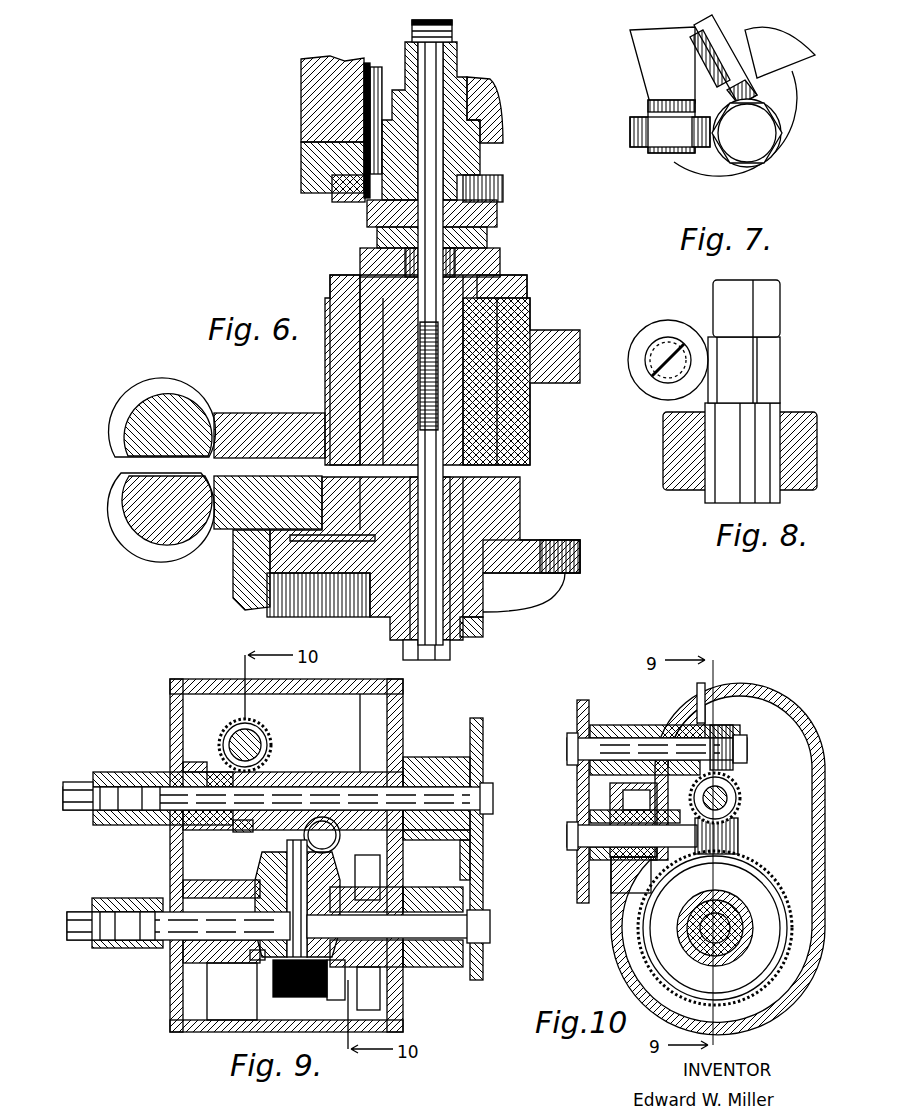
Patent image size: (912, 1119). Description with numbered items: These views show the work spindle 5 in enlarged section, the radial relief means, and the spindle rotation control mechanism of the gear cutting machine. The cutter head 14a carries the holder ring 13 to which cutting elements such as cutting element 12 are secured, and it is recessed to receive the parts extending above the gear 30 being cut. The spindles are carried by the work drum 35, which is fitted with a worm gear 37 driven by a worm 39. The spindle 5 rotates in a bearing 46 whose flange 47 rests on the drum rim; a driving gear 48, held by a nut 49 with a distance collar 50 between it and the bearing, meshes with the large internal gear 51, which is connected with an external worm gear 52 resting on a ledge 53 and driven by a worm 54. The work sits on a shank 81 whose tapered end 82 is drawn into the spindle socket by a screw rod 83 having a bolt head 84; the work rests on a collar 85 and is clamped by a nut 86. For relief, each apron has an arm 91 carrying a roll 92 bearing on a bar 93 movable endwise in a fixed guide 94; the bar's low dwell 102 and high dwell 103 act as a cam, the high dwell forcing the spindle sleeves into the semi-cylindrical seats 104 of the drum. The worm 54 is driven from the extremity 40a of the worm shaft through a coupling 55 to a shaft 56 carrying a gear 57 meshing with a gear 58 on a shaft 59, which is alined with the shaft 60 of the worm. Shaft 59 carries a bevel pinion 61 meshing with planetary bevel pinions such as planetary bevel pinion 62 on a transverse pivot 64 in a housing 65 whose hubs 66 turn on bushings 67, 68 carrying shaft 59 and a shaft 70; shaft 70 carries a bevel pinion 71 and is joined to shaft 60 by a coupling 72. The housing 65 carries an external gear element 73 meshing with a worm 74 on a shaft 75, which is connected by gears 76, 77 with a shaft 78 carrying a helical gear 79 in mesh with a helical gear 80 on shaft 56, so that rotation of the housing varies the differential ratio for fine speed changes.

In FIG. 6, the work spindle 5 is at (457, 523).
In FIG. 6, the cutting element 12 is at (345, 196).
In FIG. 6, the holder ring 13 is at (322, 163).
In FIG. 6, the cutter head 14a is at (312, 100).
In FIG. 6, the gear 30 is at (484, 213).
In FIG. 6, the work drum 35 is at (342, 379).
In FIG. 6, the worm gear 37 is at (247, 424).
In FIG. 6, the worm 39 is at (172, 384).
In FIG. 6, the bearing 46 is at (490, 397).
In FIG. 6, the flange 47 is at (520, 284).
In FIG. 6, the driving gear 48 is at (526, 565).
In FIG. 6, the nut 49 is at (475, 633).
In FIG. 6, the distance collar 50 is at (513, 538).
In FIG. 6, the internal gear 51 is at (260, 612).
In FIG. 6, the worm gear 52 is at (227, 531).
In FIG. 6, the ledge 53 is at (247, 577).
In FIG. 6, the worm 54 is at (163, 549).
In FIG. 6, the shank 81 is at (433, 173).
In FIG. 6, the tapered end 82 is at (443, 273).
In FIG. 6, the screw rod 83 is at (427, 507).
In FIG. 6, the bolt head 84 is at (428, 649).
In FIG. 6, the collar 85 is at (478, 238).
In FIG. 6, the nut 86 is at (452, 30).
In FIG. 6, the semi-cylindrical seat 104 is at (360, 323).
In FIG. 7, the arm 91 is at (653, 58).
In FIG. 7, the roll 92 is at (640, 141).
In FIG. 8, the roll 92 is at (668, 330).
In FIG. 7, the bar 93 is at (755, 150).
In FIG. 8, the bar 93 is at (748, 442).
In FIG. 7, the fixed guide 94 is at (793, 177).
In FIG. 8, the fixed guide 94 is at (800, 455).
In FIG. 7, the low dwell 102 is at (775, 117).
In FIG. 8, the low dwell 102 is at (767, 323).
In FIG. 7, the high dwell 103 is at (772, 107).
In FIG. 8, the high dwell 103 is at (767, 375).
In FIG. 9, the extremity of shaft 40a is at (85, 788).
In FIG. 9, the coupling 55 is at (120, 782).
In FIG. 9, the shaft 56 is at (308, 793).
In FIG. 10, the shaft 56 is at (740, 802).
In FIG. 9, the gear 57 is at (483, 747).
In FIG. 9, the gear 58 is at (480, 898).
In FIG. 9, the shaft 59 is at (435, 927).
In FIG. 10, the shaft 59 is at (733, 923).
In FIG. 9, the shaft 60 is at (83, 928).
In FIG. 9, the bevel pinion 61 is at (338, 977).
In FIG. 9, the planetary bevel pinion 62 is at (258, 873).
In FIG. 9, the transverse pivot 64 is at (280, 863).
In FIG. 9, the housing 65 is at (280, 980).
In FIG. 10, the housing 65 is at (742, 885).
In FIG. 9, the hub 66 is at (358, 958).
In FIG. 10, the hub 66 is at (740, 907).
In FIG. 9, the bushing 67 is at (367, 900).
In FIG. 10, the bushing 67 is at (740, 928).
In FIG. 9, the bushing 68 is at (183, 988).
In FIG. 9, the shaft 70 is at (192, 922).
In FIG. 9, the bevel pinion 71 is at (253, 957).
In FIG. 9, the coupling 72 is at (125, 940).
In FIG. 10, the external gear element 73 is at (750, 863).
In FIG. 9, the worm 74 is at (340, 823).
In FIG. 10, the worm 74 is at (738, 833).
In FIG. 9, the shaft 75 is at (313, 997).
In FIG. 10, the shaft 75 is at (610, 867).
In FIG. 10, the gear 76 is at (580, 807).
In FIG. 10, the gear 77 is at (577, 768).
In FIG. 9, the shaft 78 is at (237, 740).
In FIG. 10, the shaft 78 is at (630, 750).
In FIG. 9, the helical gear 79 is at (267, 743).
In FIG. 10, the helical gear 79 is at (727, 732).
In FIG. 9, the helical gear 80 is at (242, 828).
In FIG. 10, the helical gear 80 is at (735, 788).